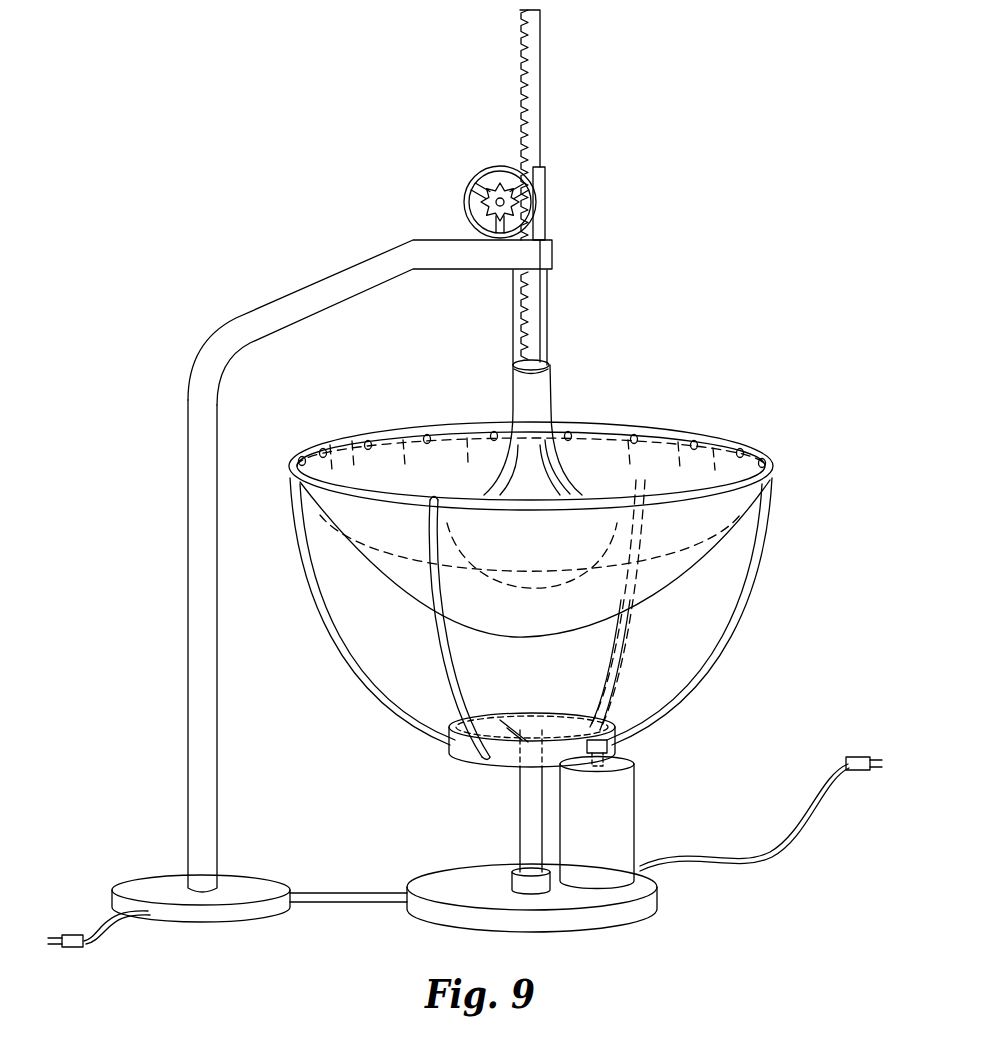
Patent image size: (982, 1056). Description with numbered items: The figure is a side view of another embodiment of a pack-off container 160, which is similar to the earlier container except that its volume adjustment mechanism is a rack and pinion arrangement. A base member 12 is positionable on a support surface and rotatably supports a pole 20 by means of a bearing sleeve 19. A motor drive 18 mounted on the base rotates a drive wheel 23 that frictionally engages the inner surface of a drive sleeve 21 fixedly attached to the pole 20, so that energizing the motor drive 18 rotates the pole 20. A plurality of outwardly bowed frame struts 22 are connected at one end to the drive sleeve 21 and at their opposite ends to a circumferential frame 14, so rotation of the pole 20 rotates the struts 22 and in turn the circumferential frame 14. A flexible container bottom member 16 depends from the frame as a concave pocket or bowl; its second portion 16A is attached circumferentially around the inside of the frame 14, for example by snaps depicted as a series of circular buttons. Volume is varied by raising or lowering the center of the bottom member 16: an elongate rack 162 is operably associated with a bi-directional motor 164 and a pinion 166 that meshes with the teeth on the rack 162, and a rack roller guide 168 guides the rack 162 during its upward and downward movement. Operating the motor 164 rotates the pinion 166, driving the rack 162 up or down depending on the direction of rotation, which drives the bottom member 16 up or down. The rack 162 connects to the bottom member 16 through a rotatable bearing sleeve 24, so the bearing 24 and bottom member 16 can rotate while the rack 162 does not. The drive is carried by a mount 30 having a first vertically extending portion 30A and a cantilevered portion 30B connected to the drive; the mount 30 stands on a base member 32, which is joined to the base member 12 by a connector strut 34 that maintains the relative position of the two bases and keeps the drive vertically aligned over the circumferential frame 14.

The container 160 is at (290, 105).
The elongate rack 162 is at (545, 305).
The bi-directional motor 164 is at (496, 165).
The pinion 166 is at (466, 206).
The rack roller guide 168 is at (548, 206).
The mount 30 is at (150, 430).
The first vertically extending portion 30A is at (188, 546).
The cantilevered portion 30B is at (312, 305).
The base member 32 is at (158, 884).
The connector strut 34 is at (330, 892).
The bearing sleeve 24 is at (517, 362).
The container bottom member 16 is at (566, 458).
The second portion 16A is at (386, 458).
The circumferential frame 14 is at (770, 476).
The frame struts 22 is at (321, 624).
The drive sleeve 21 is at (448, 742).
The drive wheel 23 is at (612, 724).
The pole 20 is at (527, 806).
The bearing sleeve 19 is at (514, 878).
The motor drive 18 is at (628, 811).
The base member 12 is at (642, 906).